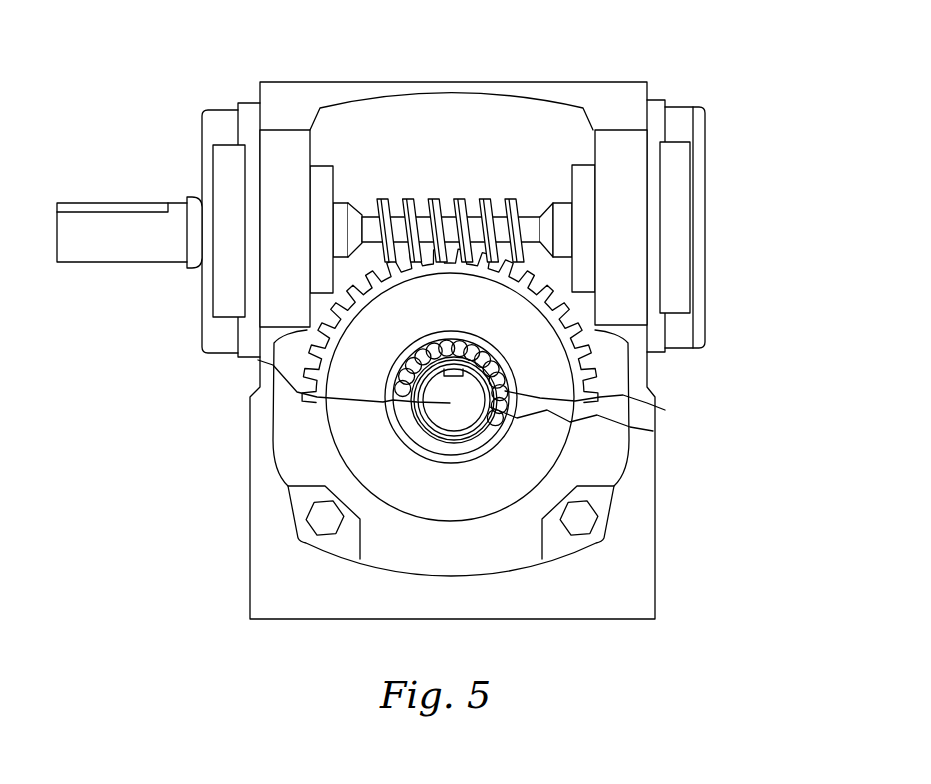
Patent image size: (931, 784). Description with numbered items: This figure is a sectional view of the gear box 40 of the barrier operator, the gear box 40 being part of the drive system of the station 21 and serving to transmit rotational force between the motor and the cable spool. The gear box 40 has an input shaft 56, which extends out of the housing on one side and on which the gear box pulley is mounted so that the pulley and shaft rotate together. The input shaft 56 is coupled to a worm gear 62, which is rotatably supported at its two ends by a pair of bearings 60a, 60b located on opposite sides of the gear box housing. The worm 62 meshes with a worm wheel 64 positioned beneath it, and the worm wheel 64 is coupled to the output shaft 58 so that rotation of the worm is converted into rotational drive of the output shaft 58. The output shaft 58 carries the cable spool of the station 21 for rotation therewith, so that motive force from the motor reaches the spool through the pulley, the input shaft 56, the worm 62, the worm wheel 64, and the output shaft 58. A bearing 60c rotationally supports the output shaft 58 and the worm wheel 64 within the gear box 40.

The station 21 is at (655, 568).
The gear box 40 is at (440, 321).
The input shaft 56 is at (138, 206).
The output shaft 58 is at (430, 422).
The bearing 60a is at (278, 163).
The bearing 60b is at (627, 307).
The bearing 60c is at (652, 406).
The worm gear 62 is at (463, 207).
The worm wheel 64 is at (580, 304).